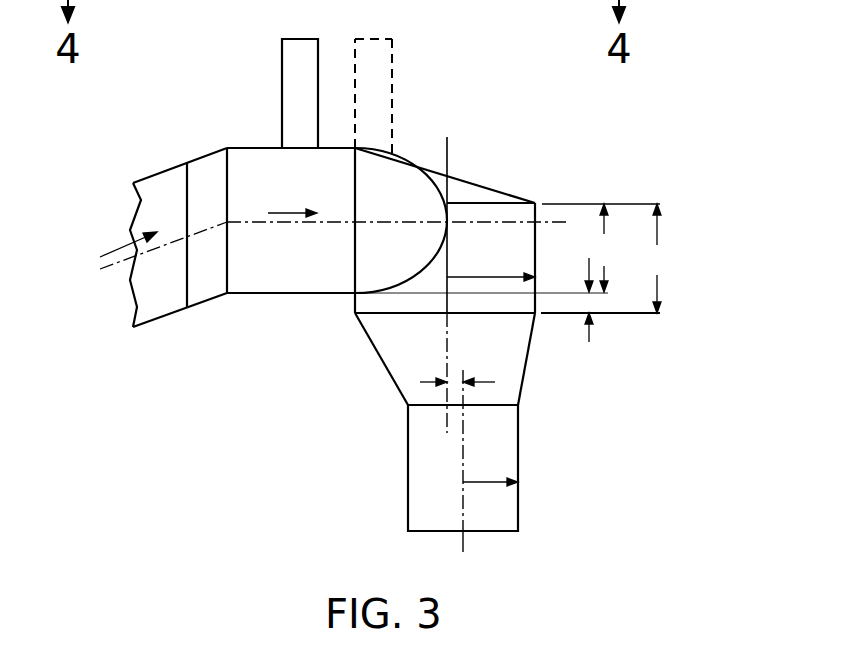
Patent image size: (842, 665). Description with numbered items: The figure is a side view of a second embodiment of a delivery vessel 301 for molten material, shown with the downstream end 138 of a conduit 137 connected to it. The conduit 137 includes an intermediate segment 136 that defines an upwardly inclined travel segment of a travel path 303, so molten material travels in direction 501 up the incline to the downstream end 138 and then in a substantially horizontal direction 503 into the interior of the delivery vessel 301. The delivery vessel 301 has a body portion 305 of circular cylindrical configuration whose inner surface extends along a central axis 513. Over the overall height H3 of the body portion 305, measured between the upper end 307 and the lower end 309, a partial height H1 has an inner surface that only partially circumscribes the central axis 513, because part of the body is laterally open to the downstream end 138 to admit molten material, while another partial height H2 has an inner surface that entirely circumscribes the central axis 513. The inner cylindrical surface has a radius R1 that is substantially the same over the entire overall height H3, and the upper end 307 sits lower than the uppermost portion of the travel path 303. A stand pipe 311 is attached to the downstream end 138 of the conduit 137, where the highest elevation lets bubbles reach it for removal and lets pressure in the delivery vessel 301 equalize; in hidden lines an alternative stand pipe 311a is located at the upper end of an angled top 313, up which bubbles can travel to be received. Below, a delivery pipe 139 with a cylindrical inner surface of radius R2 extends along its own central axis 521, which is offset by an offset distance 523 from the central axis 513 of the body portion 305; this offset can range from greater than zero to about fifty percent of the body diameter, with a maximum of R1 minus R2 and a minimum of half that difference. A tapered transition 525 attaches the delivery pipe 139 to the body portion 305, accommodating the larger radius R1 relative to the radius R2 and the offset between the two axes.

The intermediate segment 136 is at (160, 325).
The conduit 137 is at (132, 212).
The downstream end 138 is at (280, 294).
The delivery pipe 139 is at (408, 472).
The delivery vessel 301 is at (538, 184).
The travel path 303 is at (104, 271).
The body portion 305 is at (564, 218).
The upper end 307 is at (478, 203).
The lower end 309 is at (508, 314).
The stand pipe 311 is at (282, 105).
The stand pipe 311a is at (392, 73).
The angled top 313 is at (442, 172).
The direction 501 is at (106, 252).
The direction 503 is at (286, 210).
The central axis 513 is at (450, 236).
The central axis 521 is at (463, 543).
The offset distance 523 is at (425, 380).
The tapered transition 525 is at (376, 352).
The radius R1 is at (513, 277).
The radius R2 is at (482, 482).
The partial height H1 is at (605, 248).
The partial height H2 is at (590, 334).
The overall height H3 is at (657, 258).